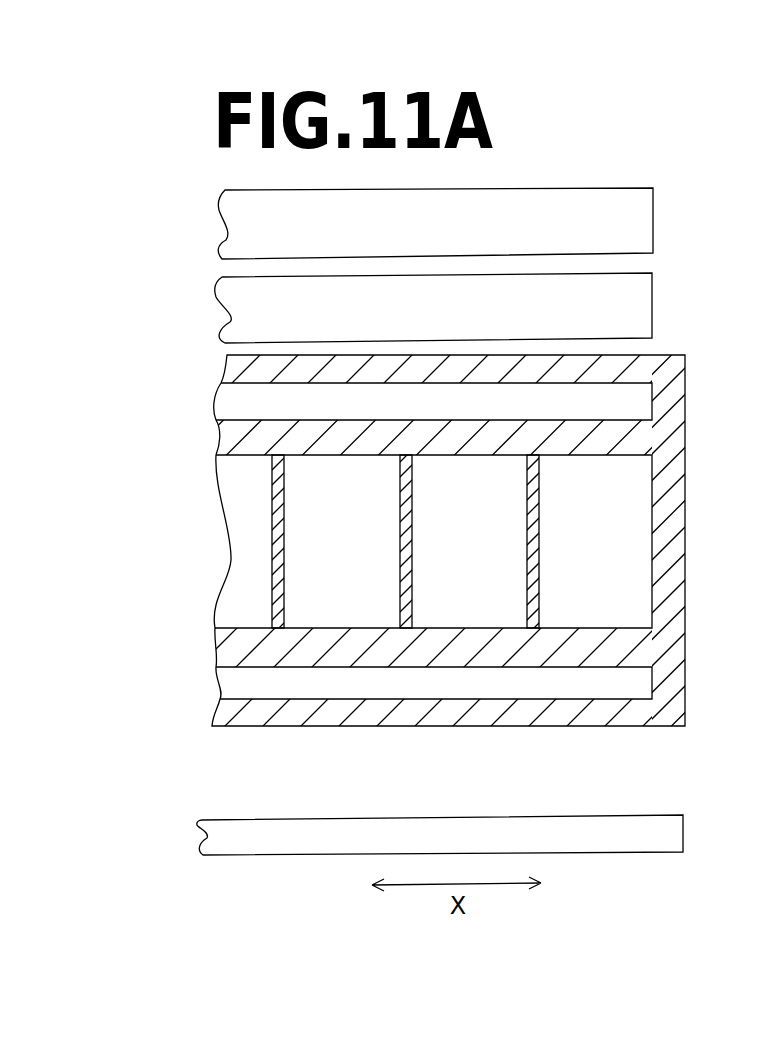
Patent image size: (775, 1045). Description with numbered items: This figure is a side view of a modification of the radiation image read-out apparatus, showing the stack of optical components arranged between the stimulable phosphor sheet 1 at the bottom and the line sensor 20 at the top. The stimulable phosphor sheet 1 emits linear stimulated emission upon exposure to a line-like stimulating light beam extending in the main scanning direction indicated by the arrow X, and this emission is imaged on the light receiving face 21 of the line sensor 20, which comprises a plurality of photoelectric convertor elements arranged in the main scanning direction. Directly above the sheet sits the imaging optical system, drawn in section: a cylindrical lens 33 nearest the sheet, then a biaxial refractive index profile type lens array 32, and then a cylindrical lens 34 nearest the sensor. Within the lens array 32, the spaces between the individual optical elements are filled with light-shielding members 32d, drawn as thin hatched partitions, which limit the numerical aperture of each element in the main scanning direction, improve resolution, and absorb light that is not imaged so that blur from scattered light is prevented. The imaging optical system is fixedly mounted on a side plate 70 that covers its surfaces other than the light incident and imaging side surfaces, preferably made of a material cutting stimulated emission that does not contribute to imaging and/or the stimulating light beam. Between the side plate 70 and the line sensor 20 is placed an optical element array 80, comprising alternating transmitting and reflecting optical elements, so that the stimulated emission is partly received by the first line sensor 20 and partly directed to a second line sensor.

The line sensor 20 is at (613, 200).
The light receiving face 21 is at (645, 268).
The optical element array 80 is at (644, 312).
The side plate 70 is at (666, 372).
The cylindrical lens 34 is at (640, 400).
The biaxial refractive index profile type lens array 32 is at (241, 533).
The light-shielding member 32d is at (534, 454).
The cylindrical lens 33 is at (230, 686).
The stimulable phosphor sheet 1 is at (680, 834).